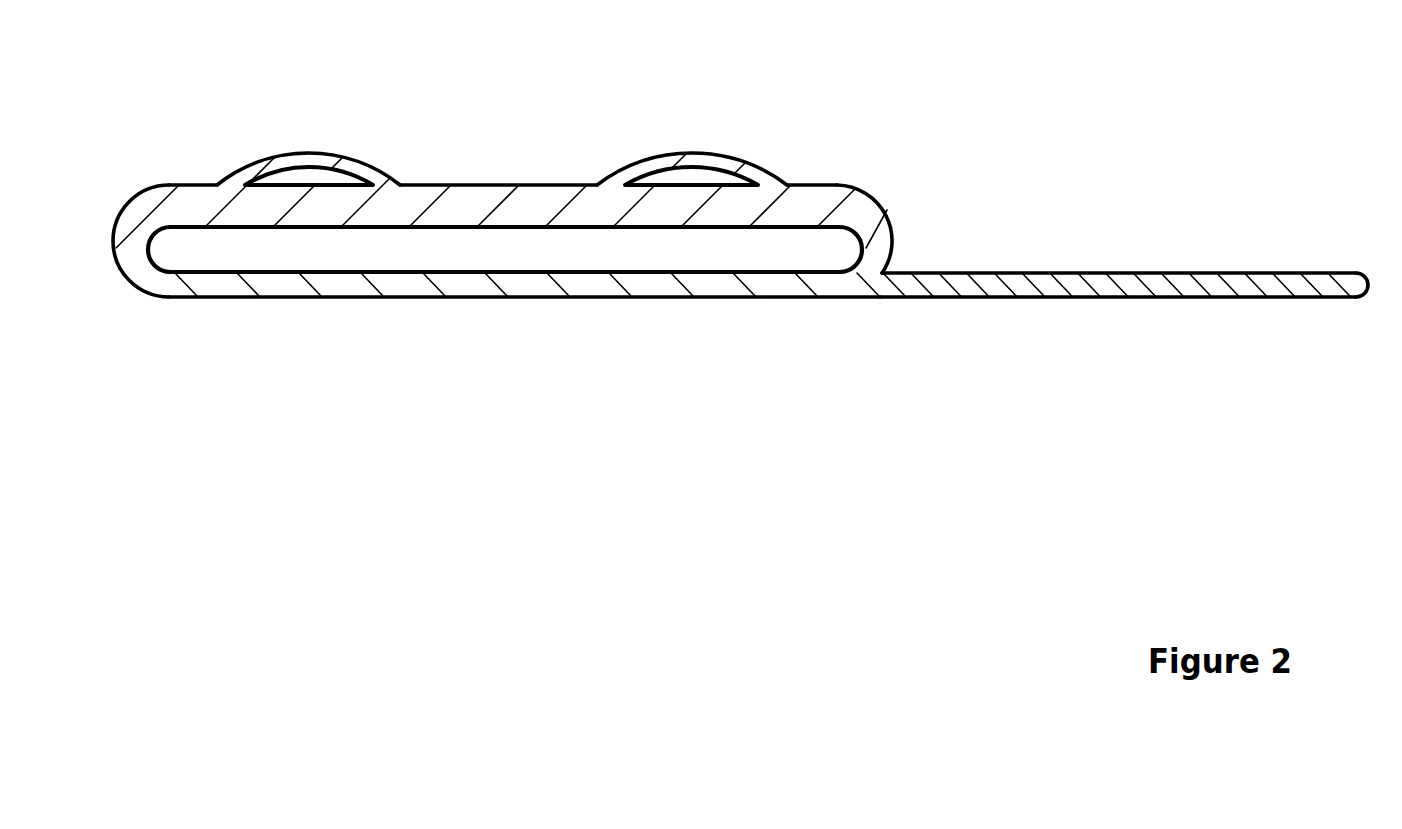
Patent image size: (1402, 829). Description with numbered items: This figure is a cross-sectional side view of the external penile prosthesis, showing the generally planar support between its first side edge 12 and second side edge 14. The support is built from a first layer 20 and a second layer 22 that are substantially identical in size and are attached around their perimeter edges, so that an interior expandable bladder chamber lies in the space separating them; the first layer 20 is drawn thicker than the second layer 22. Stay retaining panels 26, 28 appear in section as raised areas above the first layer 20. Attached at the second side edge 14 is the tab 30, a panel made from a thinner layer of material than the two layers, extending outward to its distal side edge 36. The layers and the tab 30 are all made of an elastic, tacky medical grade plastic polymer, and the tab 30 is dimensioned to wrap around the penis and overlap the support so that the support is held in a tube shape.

The first side edge 12 is at (128, 240).
The second side edge 14 is at (887, 210).
The first layer 20 is at (552, 202).
The second layer 22 is at (550, 283).
The stay retaining panel 26 is at (324, 155).
The stay retaining panel 28 is at (703, 152).
The tab 30 is at (1248, 298).
The distal side edge 36 is at (1366, 272).